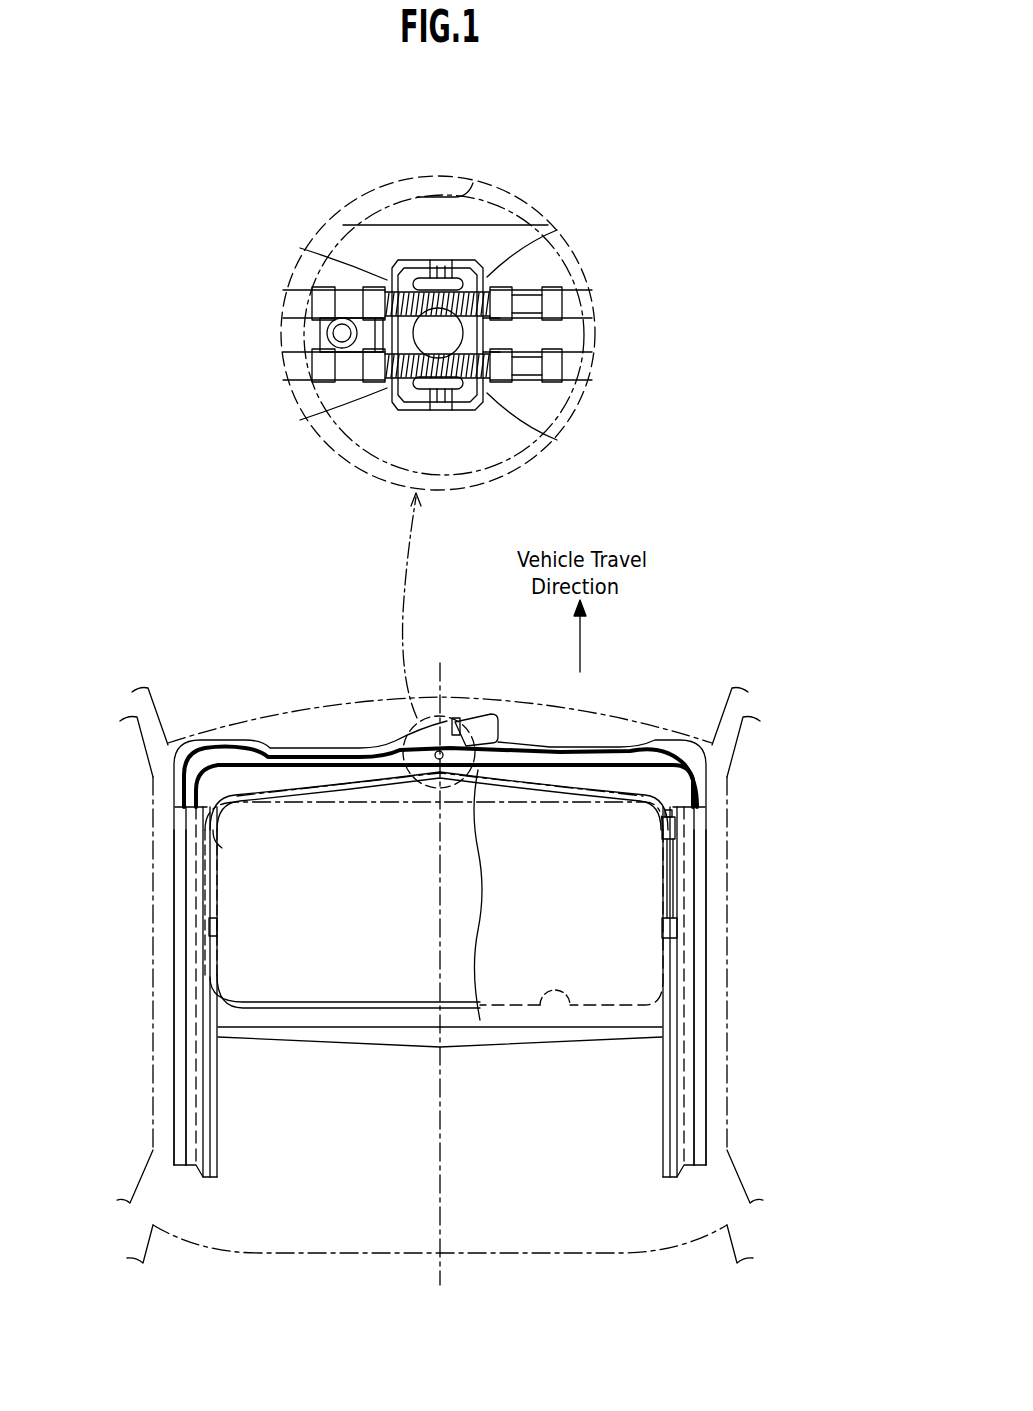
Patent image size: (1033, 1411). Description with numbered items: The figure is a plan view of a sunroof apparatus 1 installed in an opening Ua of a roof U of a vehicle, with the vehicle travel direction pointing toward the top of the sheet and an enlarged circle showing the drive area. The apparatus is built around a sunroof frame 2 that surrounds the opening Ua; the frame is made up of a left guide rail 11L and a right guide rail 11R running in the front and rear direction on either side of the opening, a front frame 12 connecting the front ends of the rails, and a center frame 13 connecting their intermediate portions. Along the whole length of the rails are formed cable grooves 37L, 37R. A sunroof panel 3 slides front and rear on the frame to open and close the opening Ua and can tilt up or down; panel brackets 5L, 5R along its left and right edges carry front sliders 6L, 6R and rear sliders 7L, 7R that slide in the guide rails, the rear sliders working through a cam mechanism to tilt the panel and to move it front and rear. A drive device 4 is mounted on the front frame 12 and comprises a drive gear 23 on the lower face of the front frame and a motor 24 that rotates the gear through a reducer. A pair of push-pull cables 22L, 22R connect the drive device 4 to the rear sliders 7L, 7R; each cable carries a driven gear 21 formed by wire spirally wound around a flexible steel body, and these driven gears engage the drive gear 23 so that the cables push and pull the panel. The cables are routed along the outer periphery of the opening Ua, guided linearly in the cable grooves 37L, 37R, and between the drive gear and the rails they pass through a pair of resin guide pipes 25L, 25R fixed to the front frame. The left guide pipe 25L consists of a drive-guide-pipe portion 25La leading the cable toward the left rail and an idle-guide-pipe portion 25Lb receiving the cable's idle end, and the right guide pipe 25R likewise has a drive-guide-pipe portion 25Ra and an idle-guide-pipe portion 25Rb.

The sunroof apparatus 1 is at (270, 703).
The sunroof frame 2 is at (172, 867).
The sunroof panel 3 is at (283, 988).
The drive device 4 is at (447, 165).
The left panel bracket 5L is at (219, 880).
The right panel bracket 5R is at (670, 885).
The left front slider 6L is at (222, 838).
The right front slider 6R is at (660, 830).
The left rear slider 7L is at (219, 925).
The right rear slider 7R is at (662, 923).
The left guide rail 11L is at (180, 1070).
The right guide rail 11R is at (700, 1070).
The front frame 12 is at (373, 750).
The center frame 13 is at (407, 1037).
The driven gear 21 is at (486, 340).
The left cable 22L is at (530, 297).
The right cable 22R is at (530, 372).
The drive gear 23 is at (327, 337).
The motor 24 is at (483, 193).
The left guide pipe 25L is at (265, 752).
The drive-guide-pipe portion 25La is at (347, 297).
The idle-guide-pipe portion 25Lb is at (545, 297).
The right guide pipe 25R is at (290, 768).
The drive-guide-pipe portion 25Ra is at (545, 373).
The idle-guide-pipe portion 25Rb is at (347, 373).
The left cable groove 37L is at (180, 1008).
The right cable groove 37R is at (700, 1008).
The roof U is at (661, 714).
The opening Ua is at (560, 1008).